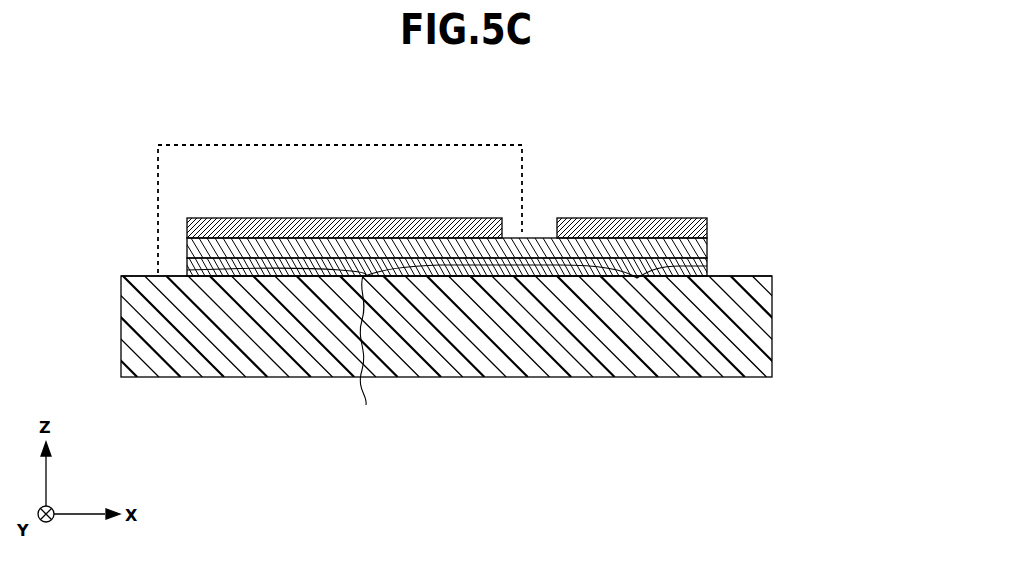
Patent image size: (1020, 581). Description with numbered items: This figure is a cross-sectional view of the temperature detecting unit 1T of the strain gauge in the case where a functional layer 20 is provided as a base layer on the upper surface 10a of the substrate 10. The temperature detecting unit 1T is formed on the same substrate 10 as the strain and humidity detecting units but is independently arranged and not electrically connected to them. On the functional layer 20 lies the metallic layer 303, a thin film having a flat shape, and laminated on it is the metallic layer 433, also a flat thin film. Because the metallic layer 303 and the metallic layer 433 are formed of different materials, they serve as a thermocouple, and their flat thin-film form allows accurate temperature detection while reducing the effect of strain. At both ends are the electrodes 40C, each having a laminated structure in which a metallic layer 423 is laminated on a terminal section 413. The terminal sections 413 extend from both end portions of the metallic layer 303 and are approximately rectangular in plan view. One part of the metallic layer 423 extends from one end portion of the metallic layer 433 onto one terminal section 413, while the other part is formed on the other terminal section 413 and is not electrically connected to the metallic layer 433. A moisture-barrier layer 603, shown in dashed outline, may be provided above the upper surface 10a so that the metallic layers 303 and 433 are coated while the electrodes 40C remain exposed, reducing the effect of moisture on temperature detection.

The temperature detecting unit 1T is at (54, 140).
The substrate 10 is at (132, 322).
The upper surface 10a is at (185, 276).
The functional layer 20 is at (186, 270).
The metallic layer 303 is at (365, 355).
The electrodes 40C is at (485, 250).
The terminal section 413 is at (637, 278).
The metallic layer 423 is at (655, 220).
The metallic layer 433 is at (281, 208).
The moisture-barrier layer 603 is at (431, 144).